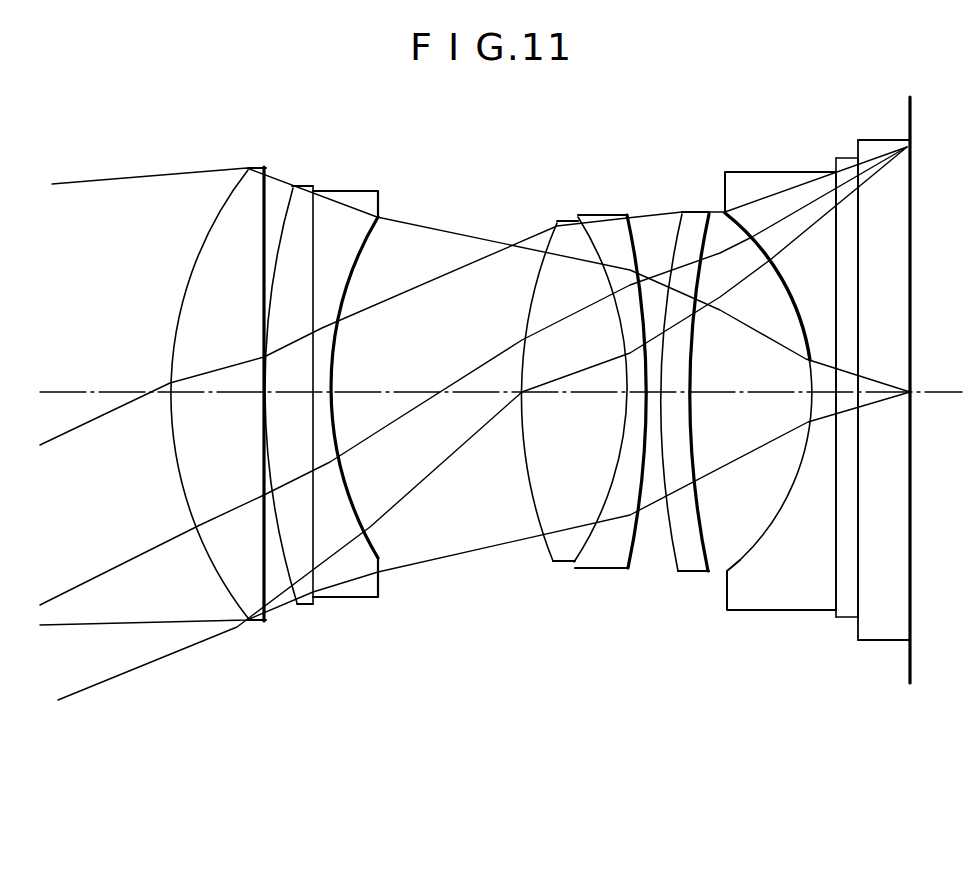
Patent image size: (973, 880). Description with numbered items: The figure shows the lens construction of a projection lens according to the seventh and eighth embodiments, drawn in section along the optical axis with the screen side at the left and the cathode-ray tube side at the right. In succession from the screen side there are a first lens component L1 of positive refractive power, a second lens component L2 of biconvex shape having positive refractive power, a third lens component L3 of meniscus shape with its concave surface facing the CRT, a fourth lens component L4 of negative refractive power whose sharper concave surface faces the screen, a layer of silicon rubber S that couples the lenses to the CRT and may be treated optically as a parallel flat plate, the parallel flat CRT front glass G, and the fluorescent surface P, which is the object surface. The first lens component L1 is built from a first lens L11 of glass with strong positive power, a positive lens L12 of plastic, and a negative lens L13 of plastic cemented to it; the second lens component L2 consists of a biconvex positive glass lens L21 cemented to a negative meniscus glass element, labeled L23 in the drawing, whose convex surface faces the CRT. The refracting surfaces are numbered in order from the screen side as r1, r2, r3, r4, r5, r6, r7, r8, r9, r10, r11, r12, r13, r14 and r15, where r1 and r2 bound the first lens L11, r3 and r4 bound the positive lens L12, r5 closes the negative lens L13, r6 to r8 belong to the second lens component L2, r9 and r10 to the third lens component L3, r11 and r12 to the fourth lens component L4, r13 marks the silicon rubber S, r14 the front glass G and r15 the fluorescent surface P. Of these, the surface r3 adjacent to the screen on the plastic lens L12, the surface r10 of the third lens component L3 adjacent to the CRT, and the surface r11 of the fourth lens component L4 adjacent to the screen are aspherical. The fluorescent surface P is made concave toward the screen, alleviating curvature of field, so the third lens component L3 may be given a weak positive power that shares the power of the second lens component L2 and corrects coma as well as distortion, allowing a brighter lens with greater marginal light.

The first lens component L1 is at (372, 110).
The first lens L11 is at (257, 167).
The positive lens L12 is at (303, 185).
The negative lens L13 is at (351, 191).
The second lens component L2 is at (645, 155).
The biconvex positive lens L21 is at (568, 220).
The third lens element of second group L23 is at (607, 215).
The third lens component L3 is at (695, 212).
The fourth lens component L4 is at (770, 172).
The silicon rubber S is at (843, 158).
The CRT front glass G is at (882, 140).
The fluorescent surface P is at (910, 118).
The first refractive surface r1 is at (233, 600).
The second refractive surface r2 is at (262, 594).
The surface r3 is at (287, 572).
The fourth refractive surface r4 is at (315, 582).
The fifth refractive surface r5 is at (372, 597).
The sixth refractive surface r6 is at (545, 550).
The seventh refractive surface r7 is at (582, 547).
The eighth refractive surface r8 is at (630, 548).
The ninth refractive surface r9 is at (675, 552).
The surface r10 is at (703, 557).
The surface r11 is at (738, 562).
The twelfth refractive surface r12 is at (837, 587).
The thirteenth surface (stop) r13 is at (804, 425).
The fourteenth surface (glass plate) r14 is at (862, 593).
The fifteenth surface (image plane) r15 is at (911, 663).